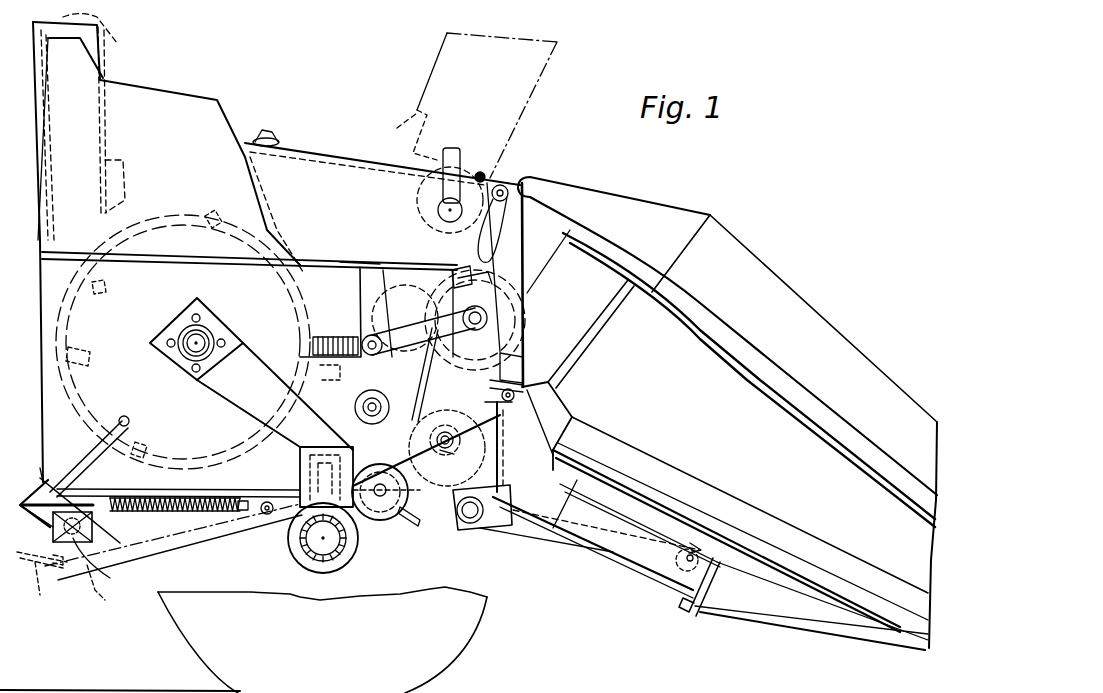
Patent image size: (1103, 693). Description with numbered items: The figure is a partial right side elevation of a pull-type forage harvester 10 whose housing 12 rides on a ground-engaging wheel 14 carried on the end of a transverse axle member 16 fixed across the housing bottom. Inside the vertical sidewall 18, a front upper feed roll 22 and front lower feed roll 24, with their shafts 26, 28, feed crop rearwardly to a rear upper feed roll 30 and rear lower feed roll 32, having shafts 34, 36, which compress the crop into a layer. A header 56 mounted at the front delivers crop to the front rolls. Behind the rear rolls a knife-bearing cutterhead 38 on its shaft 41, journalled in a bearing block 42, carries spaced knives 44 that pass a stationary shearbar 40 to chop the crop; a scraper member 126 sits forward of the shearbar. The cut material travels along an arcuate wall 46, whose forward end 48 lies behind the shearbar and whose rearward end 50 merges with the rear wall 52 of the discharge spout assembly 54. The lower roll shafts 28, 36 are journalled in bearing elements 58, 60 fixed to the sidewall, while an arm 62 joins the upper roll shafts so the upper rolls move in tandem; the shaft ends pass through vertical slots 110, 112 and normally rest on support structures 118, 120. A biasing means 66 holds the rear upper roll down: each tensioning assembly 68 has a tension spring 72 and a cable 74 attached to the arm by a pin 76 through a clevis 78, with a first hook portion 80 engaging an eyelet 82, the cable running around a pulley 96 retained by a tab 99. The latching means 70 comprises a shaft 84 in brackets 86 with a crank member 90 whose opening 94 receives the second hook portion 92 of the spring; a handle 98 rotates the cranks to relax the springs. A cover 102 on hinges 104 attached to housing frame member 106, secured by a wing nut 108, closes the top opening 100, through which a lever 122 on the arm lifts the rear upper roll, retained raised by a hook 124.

The forage harvester 10 is at (358, 80).
The housing 12 is at (42, 385).
The ground-engaging wheels 14 is at (478, 628).
The axle member 16 is at (355, 545).
The vertical sidewall 18 is at (330, 312).
The front upper feed roll 22 is at (526, 300).
The front lower feed roll 24 is at (506, 478).
The front upper feed roll shaft 26 is at (475, 327).
The front lower feed roll shaft 28 is at (454, 446).
The rear upper feed roll 30 is at (420, 196).
The rear lower feed roll 32 is at (380, 485).
The rear upper feed roll shaft 34 is at (378, 336).
The rear lower feed roll shaft 36 is at (447, 445).
The cutterhead 38 is at (172, 225).
The shearbar 40 is at (300, 380).
The cutterhead shaft 41 is at (208, 333).
The bearing block 42 is at (175, 330).
The knives 44 is at (209, 215).
The arcuate wall 46 is at (92, 440).
The forward end of arcuate wall 48 is at (360, 462).
The rearward end of arcuate wall 50 is at (43, 272).
The rear wall of discharge spout assembly 52 is at (114, 40).
The discharge spout assembly 54 is at (138, 66).
The header 56 is at (745, 232).
The bearing element 58 is at (486, 476).
The bearing element 60 is at (415, 458).
The arm 62 is at (456, 275).
The biasing means 66 is at (192, 546).
The tensioning assembly 68 is at (244, 516).
The latching means 70 is at (99, 520).
The tension spring 72 is at (180, 512).
The cable 74 is at (505, 420).
The pin 76 is at (435, 333).
The clevis 78 is at (420, 372).
The first hook portion 80 is at (268, 518).
The eyelet 82 is at (290, 492).
The shaft 84 is at (82, 538).
The bracket 86 is at (110, 578).
The crank member 90 is at (45, 475).
The second hook portion 92 is at (50, 520).
The opening 94 is at (44, 486).
The pulley 96 is at (386, 518).
The handle 98 is at (122, 416).
The tab 99 is at (425, 520).
The top opening 100 is at (350, 254).
The cover 102 is at (340, 155).
The hinge 104 is at (483, 176).
The housing frame member 106 is at (546, 270).
The wing nut 108 is at (270, 138).
The slot 110 is at (470, 280).
The slot 112 is at (365, 280).
The support structure 118 is at (505, 377).
The support structure 120 is at (368, 372).
The lever 122 is at (455, 145).
The hook 124 is at (495, 250).
The scraper member 126 is at (366, 412).